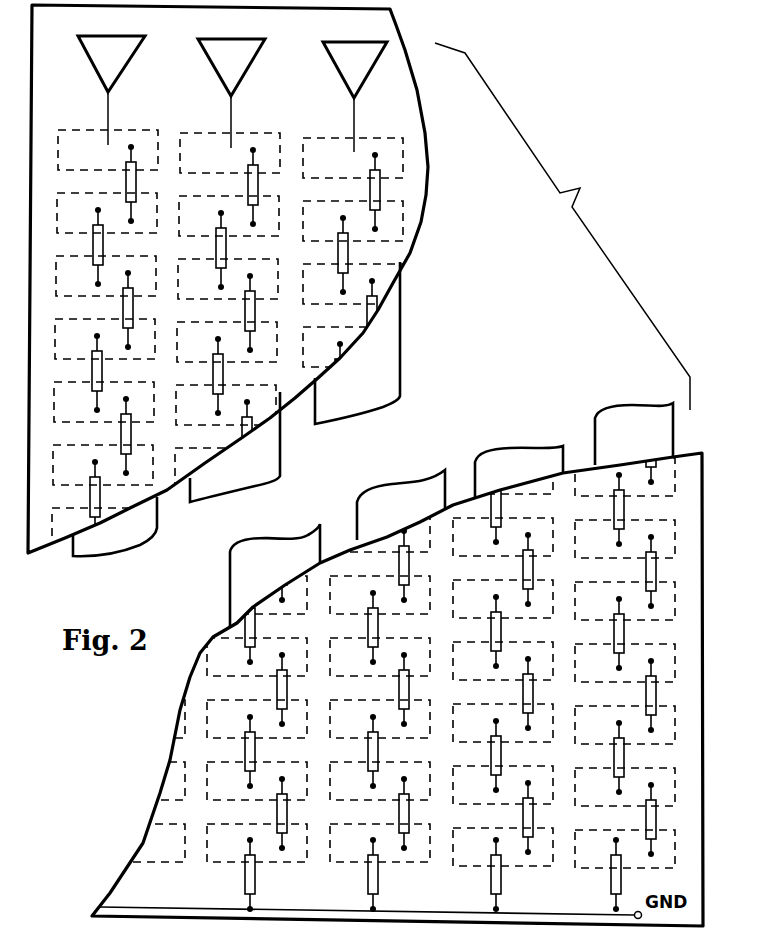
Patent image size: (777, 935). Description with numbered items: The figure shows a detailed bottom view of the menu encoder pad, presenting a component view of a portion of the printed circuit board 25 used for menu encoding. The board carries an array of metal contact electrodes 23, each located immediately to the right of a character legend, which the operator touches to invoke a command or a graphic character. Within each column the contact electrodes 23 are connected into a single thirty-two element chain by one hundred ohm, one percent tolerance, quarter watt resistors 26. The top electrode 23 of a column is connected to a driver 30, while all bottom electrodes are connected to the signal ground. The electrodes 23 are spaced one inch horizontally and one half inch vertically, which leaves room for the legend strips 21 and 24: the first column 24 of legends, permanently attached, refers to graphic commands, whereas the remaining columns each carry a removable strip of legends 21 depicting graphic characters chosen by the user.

The removable strip of legends 21 is at (124, 547).
The metal electrode 23 is at (90, 165).
The first column 24 is at (647, 447).
The printed circuit board 25 is at (418, 95).
The resistor 26 is at (380, 184).
The driver 30 is at (122, 67).